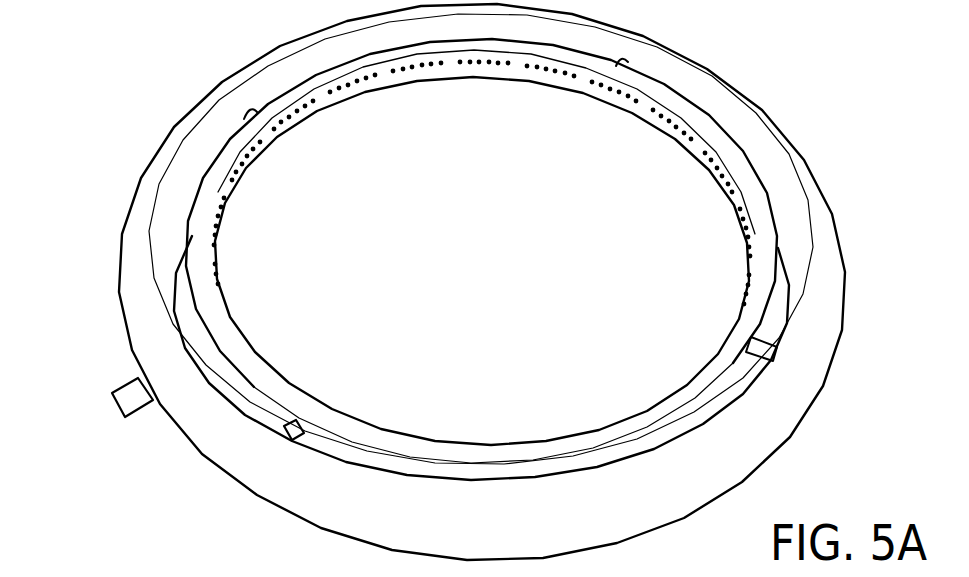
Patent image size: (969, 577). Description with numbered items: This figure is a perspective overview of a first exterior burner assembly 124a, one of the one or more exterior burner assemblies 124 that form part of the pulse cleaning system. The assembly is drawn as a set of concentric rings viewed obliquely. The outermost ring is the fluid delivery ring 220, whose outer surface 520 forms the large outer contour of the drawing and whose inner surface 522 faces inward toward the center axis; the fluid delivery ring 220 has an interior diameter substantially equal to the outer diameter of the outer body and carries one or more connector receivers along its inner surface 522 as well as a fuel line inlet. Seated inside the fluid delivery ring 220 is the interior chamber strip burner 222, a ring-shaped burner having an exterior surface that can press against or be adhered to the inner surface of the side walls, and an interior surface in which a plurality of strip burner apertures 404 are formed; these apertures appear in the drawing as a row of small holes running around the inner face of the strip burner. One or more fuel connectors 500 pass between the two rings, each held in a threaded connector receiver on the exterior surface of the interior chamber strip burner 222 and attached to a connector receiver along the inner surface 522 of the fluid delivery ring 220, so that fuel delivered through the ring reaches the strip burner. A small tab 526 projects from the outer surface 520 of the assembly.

The exterior burner assemblies 124 is at (460, 282).
The first exterior burner assembly 124a is at (150, 74).
The fluid delivery ring 220 is at (790, 147).
The interior chamber strip burner 222 is at (693, 117).
The plurality of strip burner apertures 404 is at (617, 92).
The fuel connectors 500 is at (763, 356).
The outer surface 520 is at (247, 475).
The inner surface 522 is at (186, 182).
The tab 526 is at (150, 403).